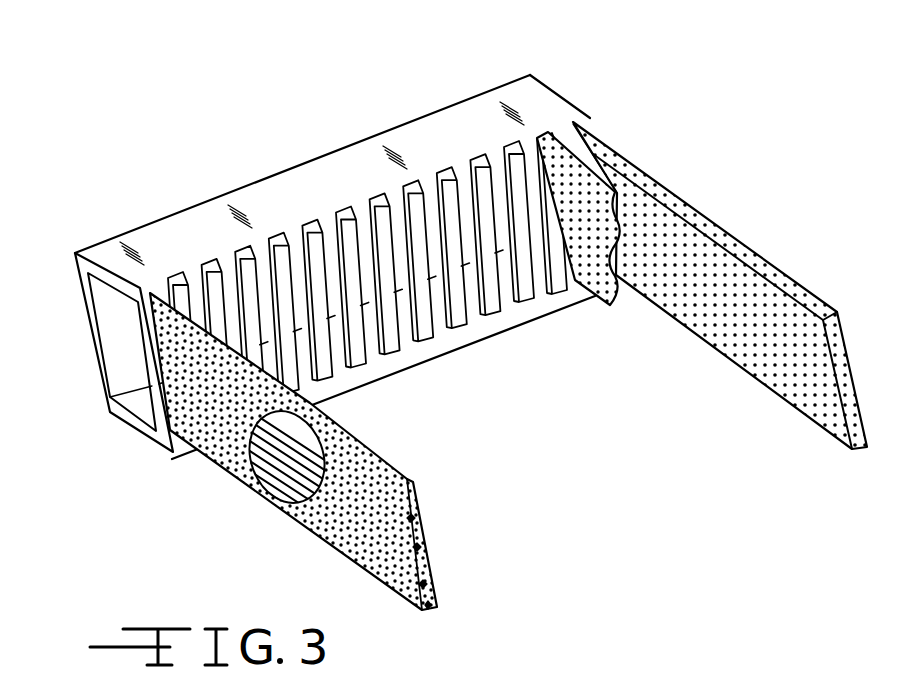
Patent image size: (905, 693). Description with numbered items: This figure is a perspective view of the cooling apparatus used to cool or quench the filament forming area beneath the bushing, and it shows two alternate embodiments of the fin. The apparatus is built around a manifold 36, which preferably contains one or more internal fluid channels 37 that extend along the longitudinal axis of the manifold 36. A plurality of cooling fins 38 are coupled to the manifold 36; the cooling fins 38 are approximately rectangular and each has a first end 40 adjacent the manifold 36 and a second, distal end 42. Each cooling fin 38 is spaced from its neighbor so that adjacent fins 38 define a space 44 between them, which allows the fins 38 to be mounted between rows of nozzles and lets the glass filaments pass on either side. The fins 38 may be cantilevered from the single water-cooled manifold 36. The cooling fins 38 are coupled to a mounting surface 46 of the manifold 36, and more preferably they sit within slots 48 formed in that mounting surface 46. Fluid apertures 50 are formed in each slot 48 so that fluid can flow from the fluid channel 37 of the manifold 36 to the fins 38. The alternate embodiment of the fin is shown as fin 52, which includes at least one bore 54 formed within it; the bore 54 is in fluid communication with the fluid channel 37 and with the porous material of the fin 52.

The manifold 36 is at (233, 191).
The internal fluid channel 37 is at (114, 330).
The cooling fin 38 is at (680, 198).
The first end 40 is at (590, 121).
The second, distal end 42 is at (797, 282).
The space 44 is at (562, 130).
The mounting surface 46 is at (523, 317).
The slot 48 is at (378, 198).
The fluid aperture 50 is at (393, 288).
The fin 52 is at (317, 542).
The bore 54 is at (267, 483).